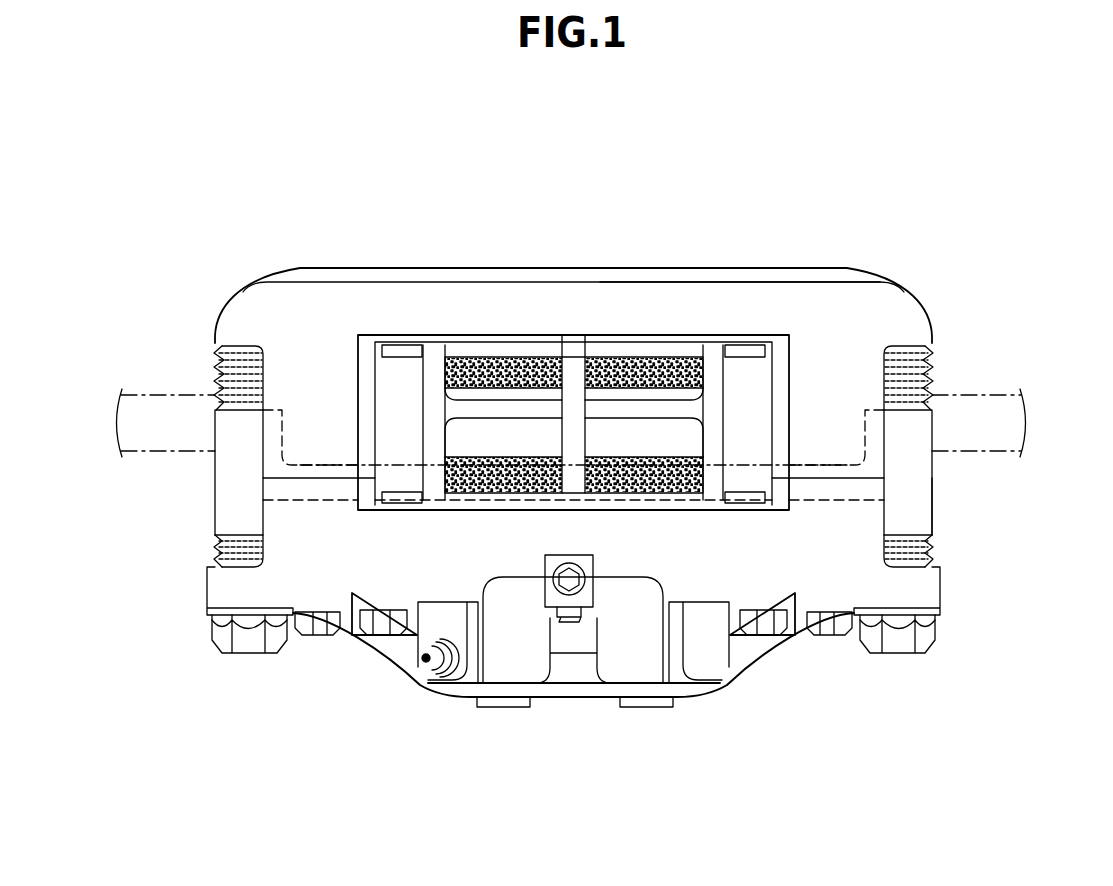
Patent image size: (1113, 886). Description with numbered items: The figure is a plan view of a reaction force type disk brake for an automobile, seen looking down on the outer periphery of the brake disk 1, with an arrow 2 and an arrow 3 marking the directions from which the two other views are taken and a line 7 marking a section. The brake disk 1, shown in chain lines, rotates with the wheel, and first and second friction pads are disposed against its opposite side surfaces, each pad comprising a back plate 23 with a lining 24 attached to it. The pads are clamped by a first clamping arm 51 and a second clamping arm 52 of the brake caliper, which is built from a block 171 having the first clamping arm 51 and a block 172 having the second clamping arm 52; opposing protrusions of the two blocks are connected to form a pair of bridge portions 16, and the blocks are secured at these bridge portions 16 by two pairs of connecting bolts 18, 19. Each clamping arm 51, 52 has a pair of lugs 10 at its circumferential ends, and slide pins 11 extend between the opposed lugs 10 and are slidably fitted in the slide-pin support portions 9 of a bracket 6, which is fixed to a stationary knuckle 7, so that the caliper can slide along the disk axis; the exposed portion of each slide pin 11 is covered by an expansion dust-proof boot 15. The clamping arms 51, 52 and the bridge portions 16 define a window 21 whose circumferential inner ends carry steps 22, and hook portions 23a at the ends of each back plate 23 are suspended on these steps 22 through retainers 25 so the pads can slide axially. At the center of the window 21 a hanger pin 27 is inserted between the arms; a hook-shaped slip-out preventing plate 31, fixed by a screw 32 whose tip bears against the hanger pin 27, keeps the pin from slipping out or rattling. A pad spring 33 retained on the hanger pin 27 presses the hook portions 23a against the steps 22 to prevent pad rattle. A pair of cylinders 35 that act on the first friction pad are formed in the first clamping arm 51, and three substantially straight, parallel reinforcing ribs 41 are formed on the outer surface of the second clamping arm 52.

The brake disk 1 is at (143, 451).
The arrow 2 is at (573, 772).
The arrow 3 is at (572, 190).
The bracket 6 is at (945, 513).
The knuckle 7 is at (110, 537).
The slide-pin support portion 9 is at (920, 483).
The lug 10 is at (932, 590).
The slide pin 11 is at (927, 637).
The expansion dust-proof boot 15 is at (930, 547).
The bridge portion 16 is at (337, 432).
The block 171 is at (810, 612).
The block 172 is at (848, 290).
The connecting bolt 18 is at (760, 637).
The connecting bolt 19 is at (833, 637).
The window 21 is at (776, 360).
The step 22 is at (780, 470).
The back plate 23 is at (633, 497).
The hook portion 23a is at (753, 503).
The lining 24 is at (683, 493).
The retainer 25 is at (755, 442).
The hanger pin 27 is at (573, 373).
The slip-out preventing plate 31 is at (493, 503).
The screw 32 is at (617, 607).
The pad spring 33 is at (537, 413).
The cylinder 35 is at (682, 695).
The reinforcing rib 41 is at (324, 277).
The first clamping arm 51 is at (722, 692).
The second clamping arm 52 is at (692, 297).